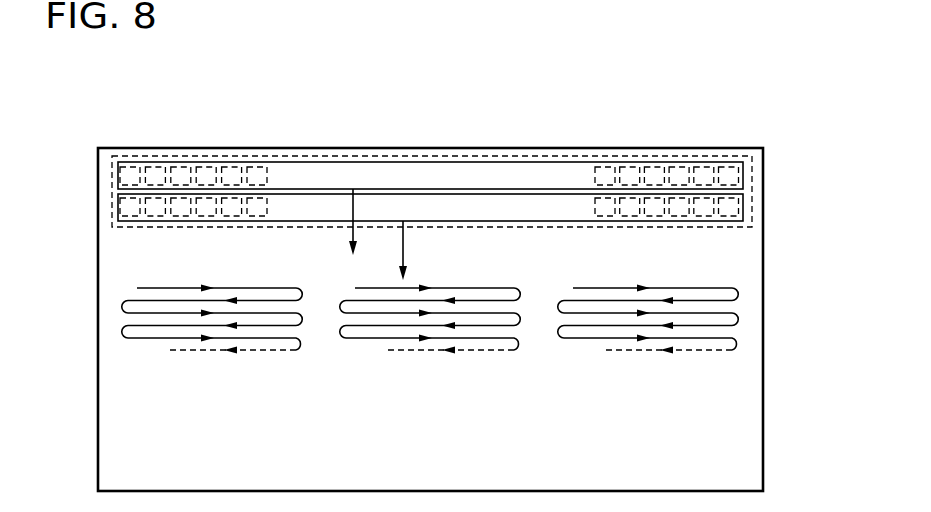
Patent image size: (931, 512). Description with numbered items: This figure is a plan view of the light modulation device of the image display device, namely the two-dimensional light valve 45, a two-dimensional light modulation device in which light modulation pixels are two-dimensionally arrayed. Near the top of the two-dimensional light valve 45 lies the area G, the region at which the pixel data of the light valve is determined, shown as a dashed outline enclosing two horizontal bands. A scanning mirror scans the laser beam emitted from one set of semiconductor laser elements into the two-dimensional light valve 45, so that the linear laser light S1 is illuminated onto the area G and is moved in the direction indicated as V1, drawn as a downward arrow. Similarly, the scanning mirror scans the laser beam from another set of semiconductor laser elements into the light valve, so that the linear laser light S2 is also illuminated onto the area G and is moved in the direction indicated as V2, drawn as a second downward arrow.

The two-dimensional light valve 45 is at (763, 265).
The area G is at (752, 176).
The linear laser light S1 is at (415, 162).
The linear laser light S2 is at (460, 223).
The direction V1 is at (353, 231).
The direction V2 is at (402, 258).